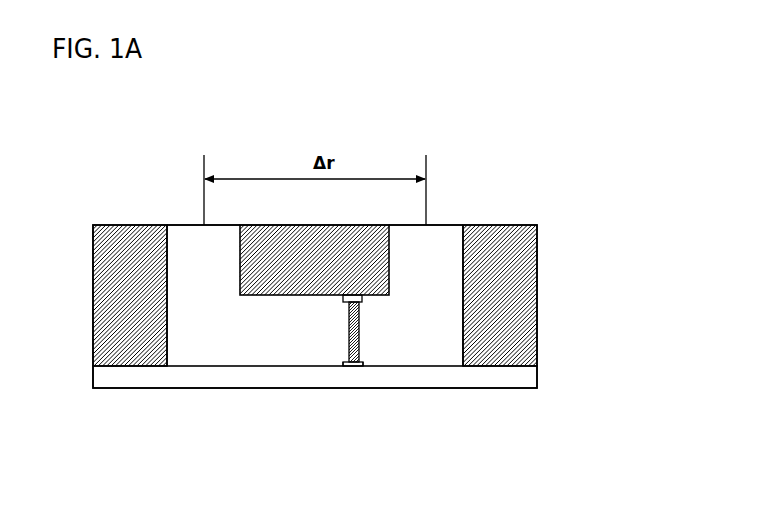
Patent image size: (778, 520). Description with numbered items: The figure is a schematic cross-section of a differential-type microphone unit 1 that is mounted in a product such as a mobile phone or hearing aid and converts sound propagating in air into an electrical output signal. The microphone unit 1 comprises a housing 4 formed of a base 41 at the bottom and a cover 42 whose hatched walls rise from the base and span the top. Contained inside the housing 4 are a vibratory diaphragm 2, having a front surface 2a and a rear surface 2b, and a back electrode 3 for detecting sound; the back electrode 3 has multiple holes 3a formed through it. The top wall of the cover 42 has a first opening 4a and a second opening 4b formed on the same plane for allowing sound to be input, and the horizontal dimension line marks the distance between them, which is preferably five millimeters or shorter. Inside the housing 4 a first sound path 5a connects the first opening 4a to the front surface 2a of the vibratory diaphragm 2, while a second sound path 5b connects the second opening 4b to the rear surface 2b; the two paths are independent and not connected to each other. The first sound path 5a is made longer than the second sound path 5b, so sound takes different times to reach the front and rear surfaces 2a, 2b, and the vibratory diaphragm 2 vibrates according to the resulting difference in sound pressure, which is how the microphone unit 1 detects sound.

The microphone unit 1 is at (348, 123).
The housing 4 is at (130, 295).
The cover 42 is at (539, 306).
The base 41 is at (511, 393).
The first opening 4a is at (192, 232).
The second opening 4b is at (437, 235).
The first sound path 5a is at (232, 330).
The second sound path 5b is at (418, 332).
The back electrode 3 is at (346, 328).
The holes 3a is at (349, 313).
The vibratory diaphragm 2 is at (364, 328).
The front surface 2a is at (349, 344).
The rear surface 2b is at (359, 344).